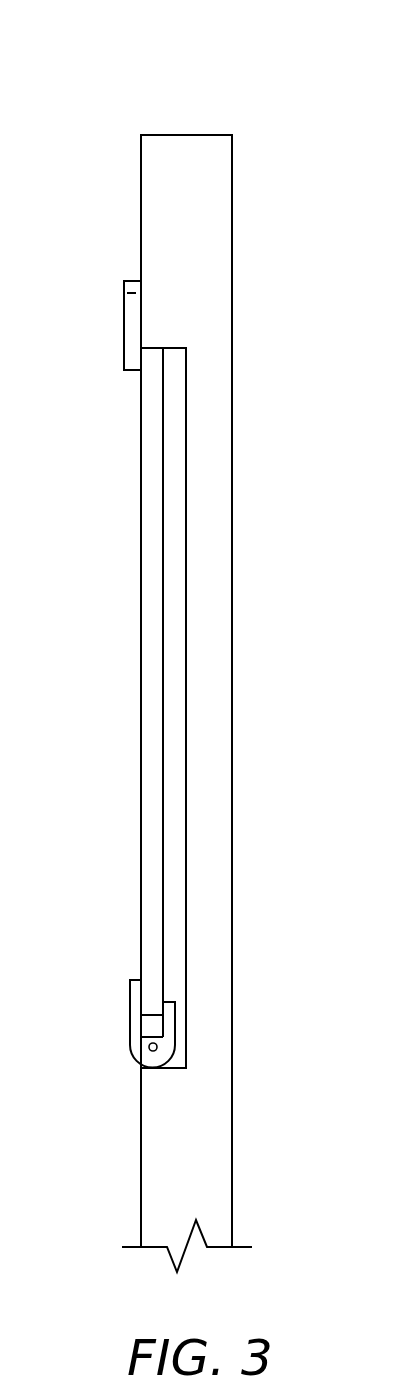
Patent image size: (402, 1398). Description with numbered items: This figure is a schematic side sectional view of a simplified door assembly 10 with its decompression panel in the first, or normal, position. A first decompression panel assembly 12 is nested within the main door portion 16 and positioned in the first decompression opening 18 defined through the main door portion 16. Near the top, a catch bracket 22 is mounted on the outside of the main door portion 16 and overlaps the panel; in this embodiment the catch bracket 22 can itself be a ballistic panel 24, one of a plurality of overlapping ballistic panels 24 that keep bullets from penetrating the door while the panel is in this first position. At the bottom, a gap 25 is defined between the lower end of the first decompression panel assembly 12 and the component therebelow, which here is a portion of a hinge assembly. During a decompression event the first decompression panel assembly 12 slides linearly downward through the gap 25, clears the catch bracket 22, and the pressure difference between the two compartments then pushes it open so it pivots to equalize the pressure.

The door assembly 10 is at (76, 128).
The first decompression panel assembly 12 is at (155, 598).
The main door portion 16 is at (221, 254).
The first decompression opening 18 is at (173, 439).
The catch bracket 22 is at (122, 325).
The ballistic panel 24 is at (132, 293).
The gap 25 is at (155, 1027).